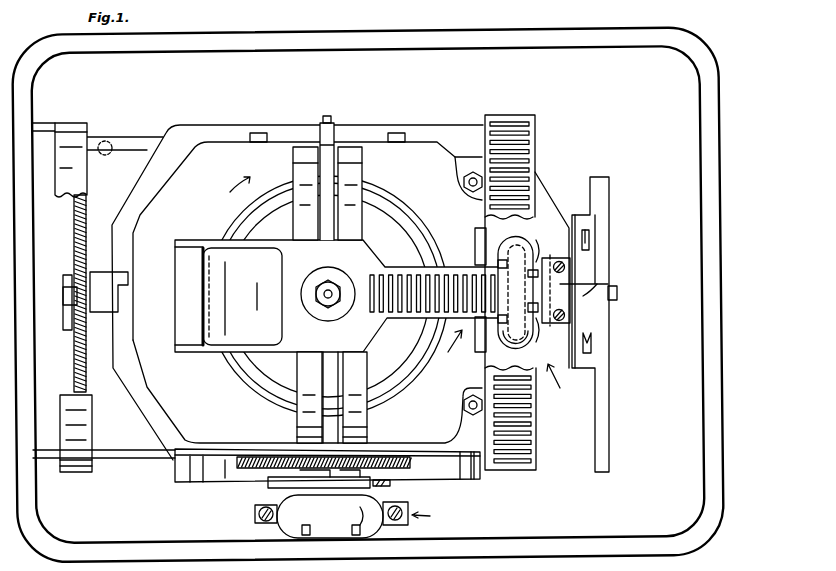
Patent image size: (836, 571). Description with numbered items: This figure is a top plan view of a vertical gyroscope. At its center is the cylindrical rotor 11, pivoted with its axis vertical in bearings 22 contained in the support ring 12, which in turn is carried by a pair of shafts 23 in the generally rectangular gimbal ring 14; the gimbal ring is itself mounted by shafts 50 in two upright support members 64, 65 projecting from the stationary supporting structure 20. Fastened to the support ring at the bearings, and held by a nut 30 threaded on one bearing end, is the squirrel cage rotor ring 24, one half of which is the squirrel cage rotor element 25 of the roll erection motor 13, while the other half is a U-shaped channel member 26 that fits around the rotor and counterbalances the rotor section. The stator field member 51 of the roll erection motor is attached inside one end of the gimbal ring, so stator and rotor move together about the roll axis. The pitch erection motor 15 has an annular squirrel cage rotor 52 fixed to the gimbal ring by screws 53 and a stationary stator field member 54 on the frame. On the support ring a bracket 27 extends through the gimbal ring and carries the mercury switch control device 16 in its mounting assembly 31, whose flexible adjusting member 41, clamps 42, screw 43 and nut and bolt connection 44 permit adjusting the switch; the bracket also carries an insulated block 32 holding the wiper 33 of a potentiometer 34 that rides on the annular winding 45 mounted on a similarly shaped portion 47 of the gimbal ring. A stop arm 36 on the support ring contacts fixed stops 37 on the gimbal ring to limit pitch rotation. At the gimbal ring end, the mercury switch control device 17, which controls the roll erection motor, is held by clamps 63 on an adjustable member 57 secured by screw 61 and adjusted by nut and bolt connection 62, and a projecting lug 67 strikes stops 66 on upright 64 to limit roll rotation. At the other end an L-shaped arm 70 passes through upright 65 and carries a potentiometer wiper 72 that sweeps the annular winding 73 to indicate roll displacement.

The rotor 11 is at (378, 220).
The support ring 12 is at (300, 208).
The roll erection motor 13 is at (453, 347).
The gimbal ring 14 is at (148, 398).
The pitch erection motor 15 is at (558, 382).
The control device 16 is at (295, 528).
The control device 17 is at (515, 340).
The supporting structure 20 is at (700, 467).
The bearings 22 is at (331, 288).
The shafts 23 is at (333, 118).
The squirrel cage rotor ring 24 is at (387, 254).
The squirrel cage rotor element 25 is at (404, 270).
The U-shaped channel member 26 is at (205, 248).
The bracket 27 is at (372, 446).
The nut 30 is at (328, 312).
The mounting assembly 31 is at (442, 513).
The insulated block 32 is at (392, 485).
The wiper 33 is at (262, 478).
The potentiometer 34 is at (230, 491).
The stop arm 36 is at (335, 138).
The fixed stops 37 is at (398, 133).
The flexible adjusting member 41 is at (408, 524).
The clamps 42 is at (362, 540).
The screw 43 is at (258, 516).
The nut and bolt connection 44 is at (404, 508).
The potentiometer winding 45 is at (455, 465).
The annular portion 47 is at (190, 468).
The shafts 50 is at (616, 300).
The stator field member 51 is at (555, 210).
The squirrel cage rotor 52 is at (530, 135).
The screws 53 is at (462, 404).
The stator field member 54 is at (474, 248).
The adjustable member 57 is at (598, 280).
The screw 61 is at (560, 278).
The nut and bolt connection 62 is at (566, 314).
The clamps 63 is at (498, 340).
The upright support member 64 is at (602, 418).
The upright support member 65 is at (80, 182).
The stops 66 is at (594, 344).
The projecting lug 67 is at (604, 287).
The L-shaped arm 70 is at (105, 312).
The potentiometer wiper 72 is at (63, 298).
The potentiometer winding 73 is at (74, 366).